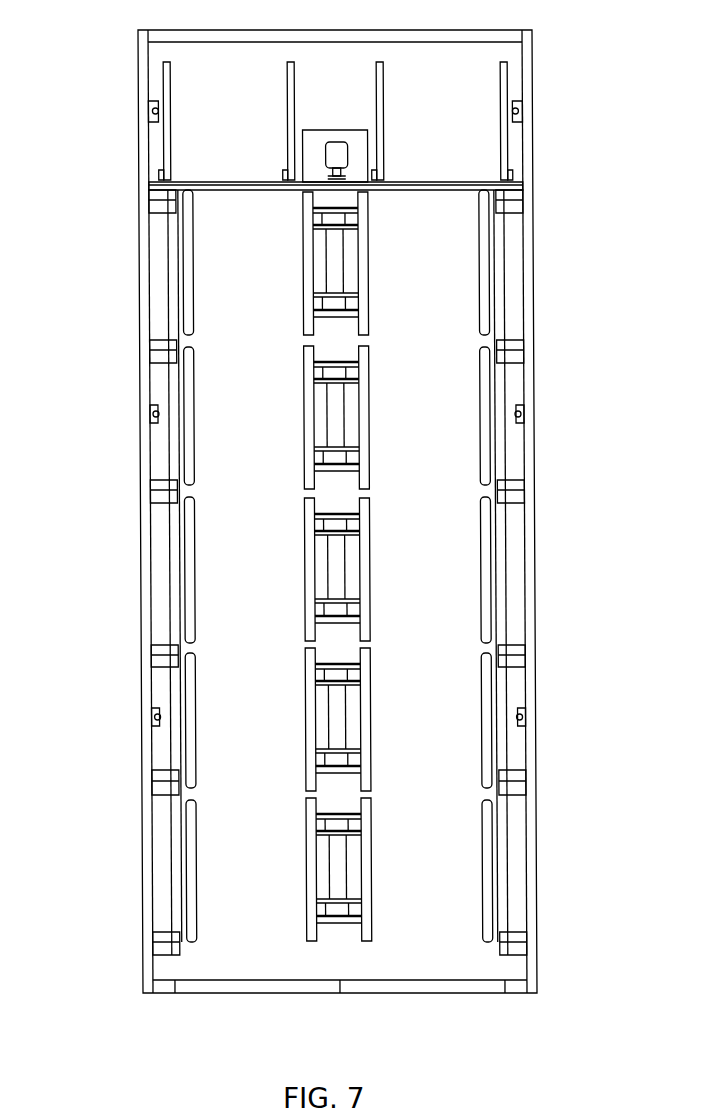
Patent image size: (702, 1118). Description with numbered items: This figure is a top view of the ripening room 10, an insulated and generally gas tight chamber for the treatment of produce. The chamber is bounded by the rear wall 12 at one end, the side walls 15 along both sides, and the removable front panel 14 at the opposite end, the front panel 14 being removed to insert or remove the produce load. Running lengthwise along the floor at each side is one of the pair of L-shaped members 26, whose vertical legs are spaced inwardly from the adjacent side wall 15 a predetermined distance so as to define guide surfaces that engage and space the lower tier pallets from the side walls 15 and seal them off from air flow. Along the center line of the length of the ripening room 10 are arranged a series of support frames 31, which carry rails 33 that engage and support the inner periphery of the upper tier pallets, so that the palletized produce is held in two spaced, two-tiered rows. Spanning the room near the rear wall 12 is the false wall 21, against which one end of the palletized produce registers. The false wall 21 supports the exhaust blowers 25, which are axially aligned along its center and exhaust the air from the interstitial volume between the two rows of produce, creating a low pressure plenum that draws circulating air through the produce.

The ripening room 10 is at (110, 414).
The rear wall 12 is at (458, 30).
The removable front panel 14 is at (465, 995).
The side walls 15 is at (138, 596).
The false wall 21 is at (255, 186).
The exhaust blowers 25 is at (335, 130).
The L-shaped members 26 is at (195, 708).
The support frames 31 is at (288, 425).
The rails 33 is at (302, 272).